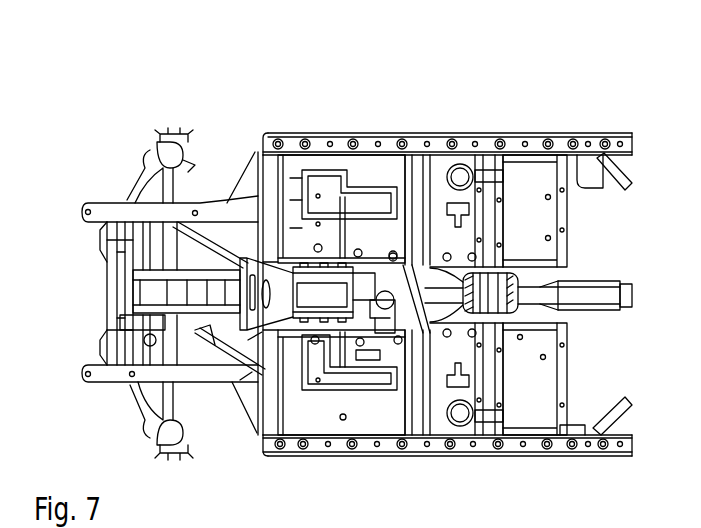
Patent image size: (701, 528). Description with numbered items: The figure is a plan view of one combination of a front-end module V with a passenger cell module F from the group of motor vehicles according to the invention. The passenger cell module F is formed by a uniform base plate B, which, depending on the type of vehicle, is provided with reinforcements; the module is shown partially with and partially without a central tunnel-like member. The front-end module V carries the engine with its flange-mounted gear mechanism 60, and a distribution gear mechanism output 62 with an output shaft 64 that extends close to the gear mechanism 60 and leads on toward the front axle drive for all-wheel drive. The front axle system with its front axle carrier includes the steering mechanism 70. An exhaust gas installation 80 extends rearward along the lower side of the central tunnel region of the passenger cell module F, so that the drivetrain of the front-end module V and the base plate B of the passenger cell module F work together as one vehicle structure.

The gear mechanism 60 is at (310, 293).
The distribution gear mechanism output 62 is at (375, 335).
The output shaft 64 is at (248, 365).
The steering mechanism 70 is at (107, 261).
The exhaust gas installation 80 is at (597, 287).
The base plate B is at (522, 405).
The passenger cell module F is at (455, 82).
The front-end module V is at (222, 118).